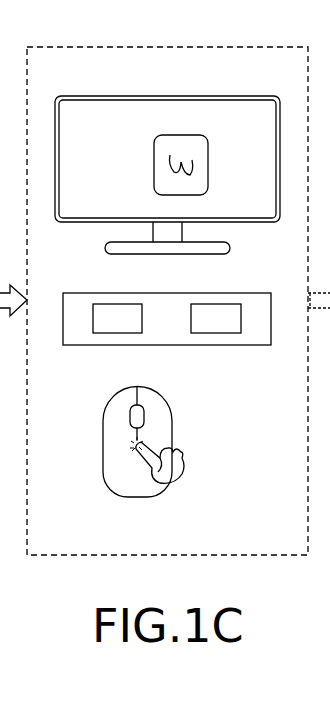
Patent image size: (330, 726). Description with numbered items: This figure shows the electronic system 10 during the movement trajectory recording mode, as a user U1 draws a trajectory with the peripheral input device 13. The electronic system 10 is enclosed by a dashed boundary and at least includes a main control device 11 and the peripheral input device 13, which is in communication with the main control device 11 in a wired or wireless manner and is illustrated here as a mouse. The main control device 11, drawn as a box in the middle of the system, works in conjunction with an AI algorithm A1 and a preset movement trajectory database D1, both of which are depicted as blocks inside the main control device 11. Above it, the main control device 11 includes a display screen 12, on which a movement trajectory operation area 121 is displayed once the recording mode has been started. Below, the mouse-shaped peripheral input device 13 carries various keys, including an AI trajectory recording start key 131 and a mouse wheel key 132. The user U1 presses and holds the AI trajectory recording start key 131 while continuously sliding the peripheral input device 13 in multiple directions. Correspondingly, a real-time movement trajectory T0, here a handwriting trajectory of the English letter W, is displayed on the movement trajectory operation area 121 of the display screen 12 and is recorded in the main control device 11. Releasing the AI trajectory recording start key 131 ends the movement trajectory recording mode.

The electronic system 10 is at (112, 38).
The main control device 11 is at (114, 298).
The display screen 12 is at (188, 112).
The movement trajectory operation area 121 is at (154, 165).
The real-time movement trajectory T0 is at (185, 155).
The AI algorithm A1 is at (118, 322).
The preset movement trajectory database D1 is at (218, 322).
The peripheral input device 13 is at (120, 473).
The AI trajectory recording start key 131 is at (130, 444).
The mouse wheel key 132 is at (148, 408).
The user U1 is at (172, 462).